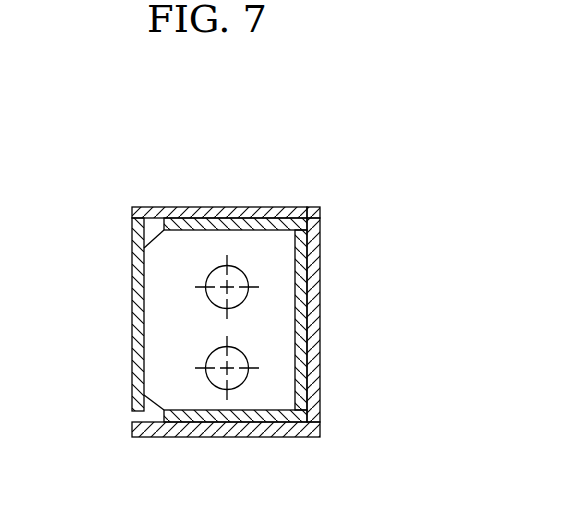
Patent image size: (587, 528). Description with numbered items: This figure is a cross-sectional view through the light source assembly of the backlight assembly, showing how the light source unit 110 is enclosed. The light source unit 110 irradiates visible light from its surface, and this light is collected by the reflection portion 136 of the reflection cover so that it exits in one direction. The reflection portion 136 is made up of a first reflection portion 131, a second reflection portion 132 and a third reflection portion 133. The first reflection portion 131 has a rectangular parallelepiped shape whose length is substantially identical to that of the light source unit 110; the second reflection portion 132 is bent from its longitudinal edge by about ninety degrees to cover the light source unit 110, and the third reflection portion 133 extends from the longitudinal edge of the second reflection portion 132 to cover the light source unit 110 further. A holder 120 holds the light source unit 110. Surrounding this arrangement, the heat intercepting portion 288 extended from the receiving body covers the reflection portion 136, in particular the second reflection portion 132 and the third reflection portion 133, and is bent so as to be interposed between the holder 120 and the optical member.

The light source unit 110 is at (212, 294).
The holder 120 is at (238, 240).
The first reflection portion 131 is at (280, 217).
The second reflection portion 132 is at (315, 320).
The third reflection portion 133 is at (273, 420).
The reflection portion 136 is at (297, 316).
The heat intercepting portion 288 is at (187, 212).